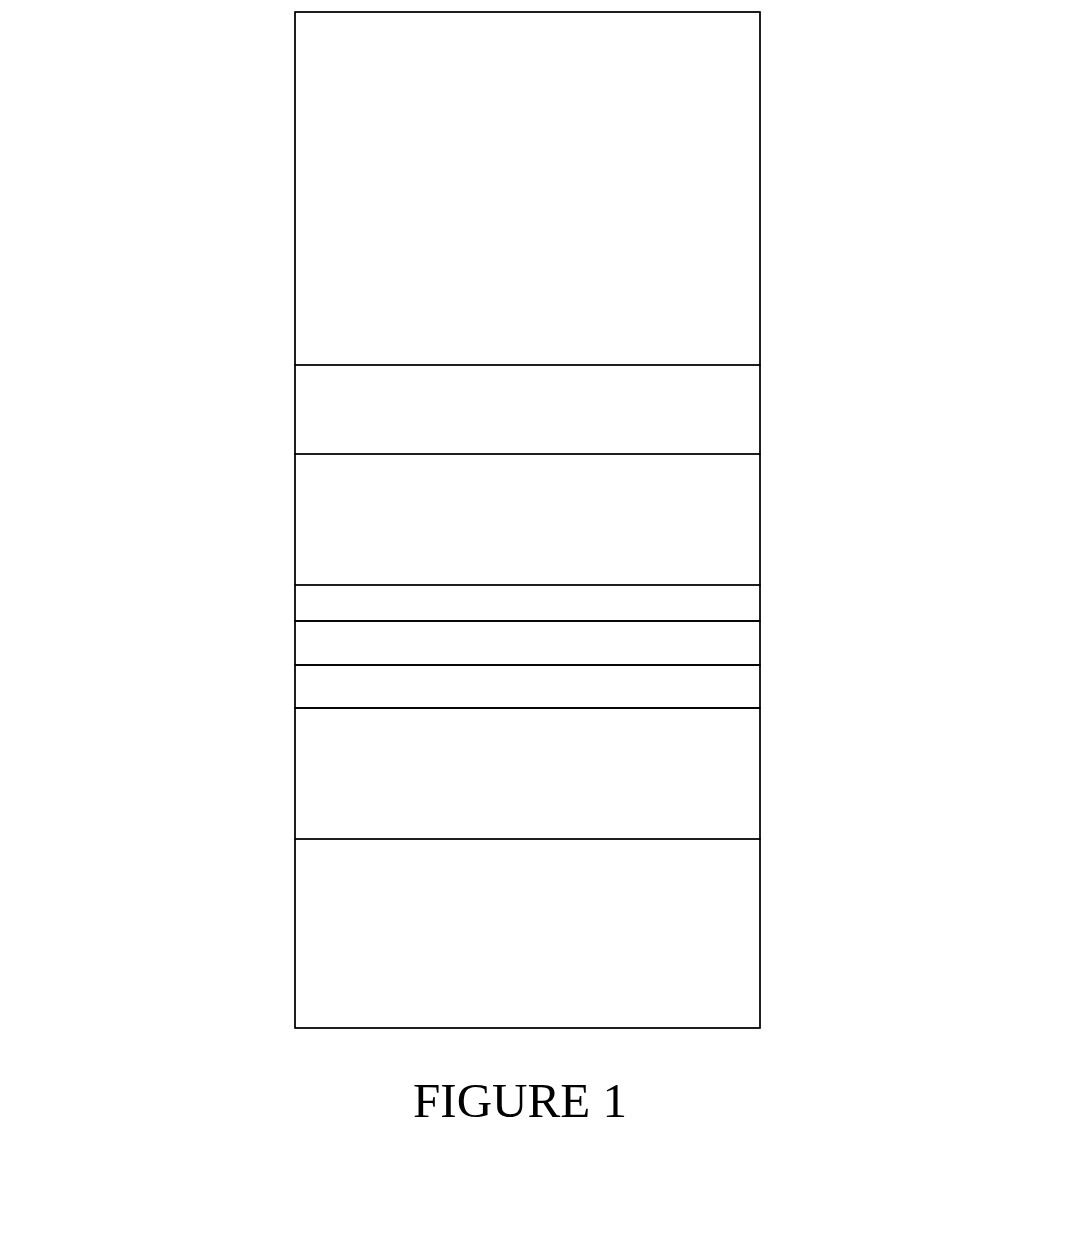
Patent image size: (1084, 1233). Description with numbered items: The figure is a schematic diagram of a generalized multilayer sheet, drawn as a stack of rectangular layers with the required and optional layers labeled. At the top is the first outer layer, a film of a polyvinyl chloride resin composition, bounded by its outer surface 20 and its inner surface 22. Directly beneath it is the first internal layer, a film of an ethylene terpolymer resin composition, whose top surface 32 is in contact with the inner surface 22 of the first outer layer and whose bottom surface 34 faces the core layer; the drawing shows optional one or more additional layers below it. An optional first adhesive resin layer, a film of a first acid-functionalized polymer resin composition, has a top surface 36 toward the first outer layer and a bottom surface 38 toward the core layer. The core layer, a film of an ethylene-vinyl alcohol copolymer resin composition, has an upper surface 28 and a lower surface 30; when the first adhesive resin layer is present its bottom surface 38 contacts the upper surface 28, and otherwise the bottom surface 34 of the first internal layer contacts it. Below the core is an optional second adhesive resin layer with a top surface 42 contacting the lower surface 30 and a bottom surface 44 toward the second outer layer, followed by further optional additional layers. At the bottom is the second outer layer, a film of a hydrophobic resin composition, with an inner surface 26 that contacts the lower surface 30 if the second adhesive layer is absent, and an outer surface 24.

The outer surface of the first outer layer 20 is at (320, 12).
The inner surface of the first outer layer 22 is at (720, 365).
The top surface of the first internal layer 32 is at (320, 365).
The bottom surface of the first internal layer 34 is at (720, 454).
The top surface of the first adhesive resin layer 36 is at (320, 585).
The bottom surface of the first adhesive resin layer 38 is at (730, 621).
The upper surface of the core layer 28 is at (322, 621).
The lower surface of the core layer 30 is at (740, 665).
The top surface of the second adhesive resin layer 42 is at (322, 665).
The bottom surface of the second adhesive resin layer 44 is at (727, 708).
The inner surface of the second outer layer 26 is at (320, 839).
The outer surface of the second outer layer 24 is at (340, 1028).